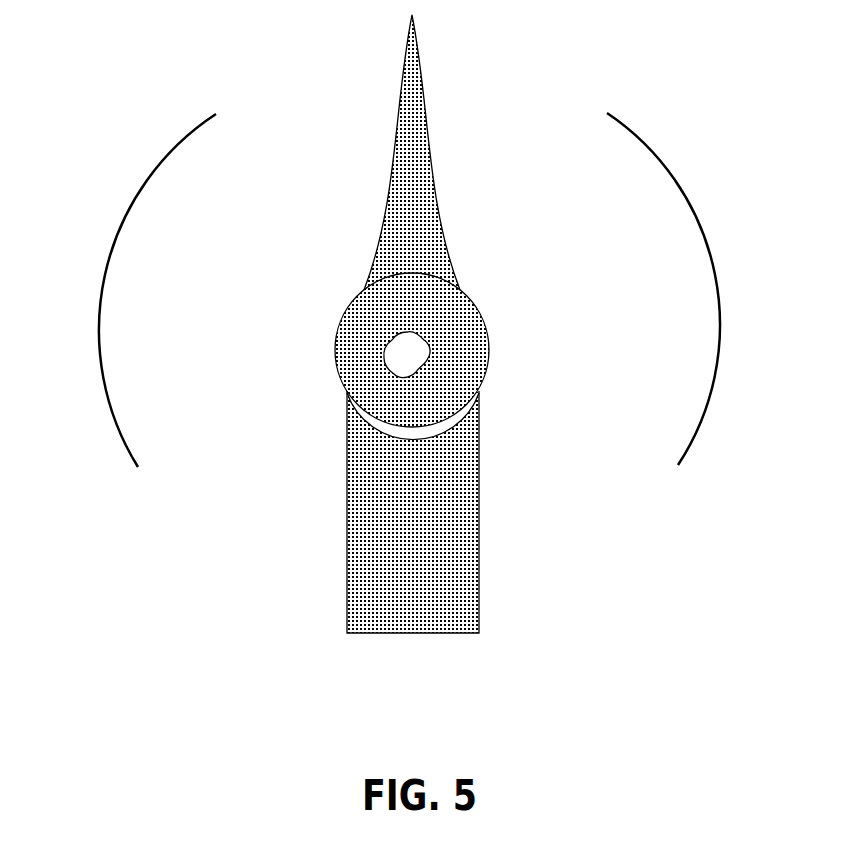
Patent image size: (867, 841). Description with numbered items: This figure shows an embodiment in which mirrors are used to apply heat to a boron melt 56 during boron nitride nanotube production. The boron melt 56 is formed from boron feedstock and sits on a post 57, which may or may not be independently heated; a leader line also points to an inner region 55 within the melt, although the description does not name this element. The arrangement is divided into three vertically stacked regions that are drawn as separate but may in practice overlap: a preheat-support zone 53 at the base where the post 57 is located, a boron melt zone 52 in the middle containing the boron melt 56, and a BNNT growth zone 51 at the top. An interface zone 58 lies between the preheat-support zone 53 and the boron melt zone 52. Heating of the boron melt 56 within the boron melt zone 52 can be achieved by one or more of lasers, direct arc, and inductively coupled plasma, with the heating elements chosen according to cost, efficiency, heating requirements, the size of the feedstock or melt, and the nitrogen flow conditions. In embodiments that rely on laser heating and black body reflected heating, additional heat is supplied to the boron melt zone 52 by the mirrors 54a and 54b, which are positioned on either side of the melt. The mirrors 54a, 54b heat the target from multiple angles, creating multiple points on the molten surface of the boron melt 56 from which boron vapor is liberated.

The BNNT growth zone 51 is at (758, 18).
The boron melt zone 52 is at (440, 444).
The preheat-support zone 53 is at (509, 528).
The mirror 54a is at (169, 274).
The mirror 54b is at (645, 273).
The core 55 is at (387, 362).
The boron melt 56 is at (334, 359).
The post 57 is at (370, 497).
The interface zone 58 is at (344, 409).